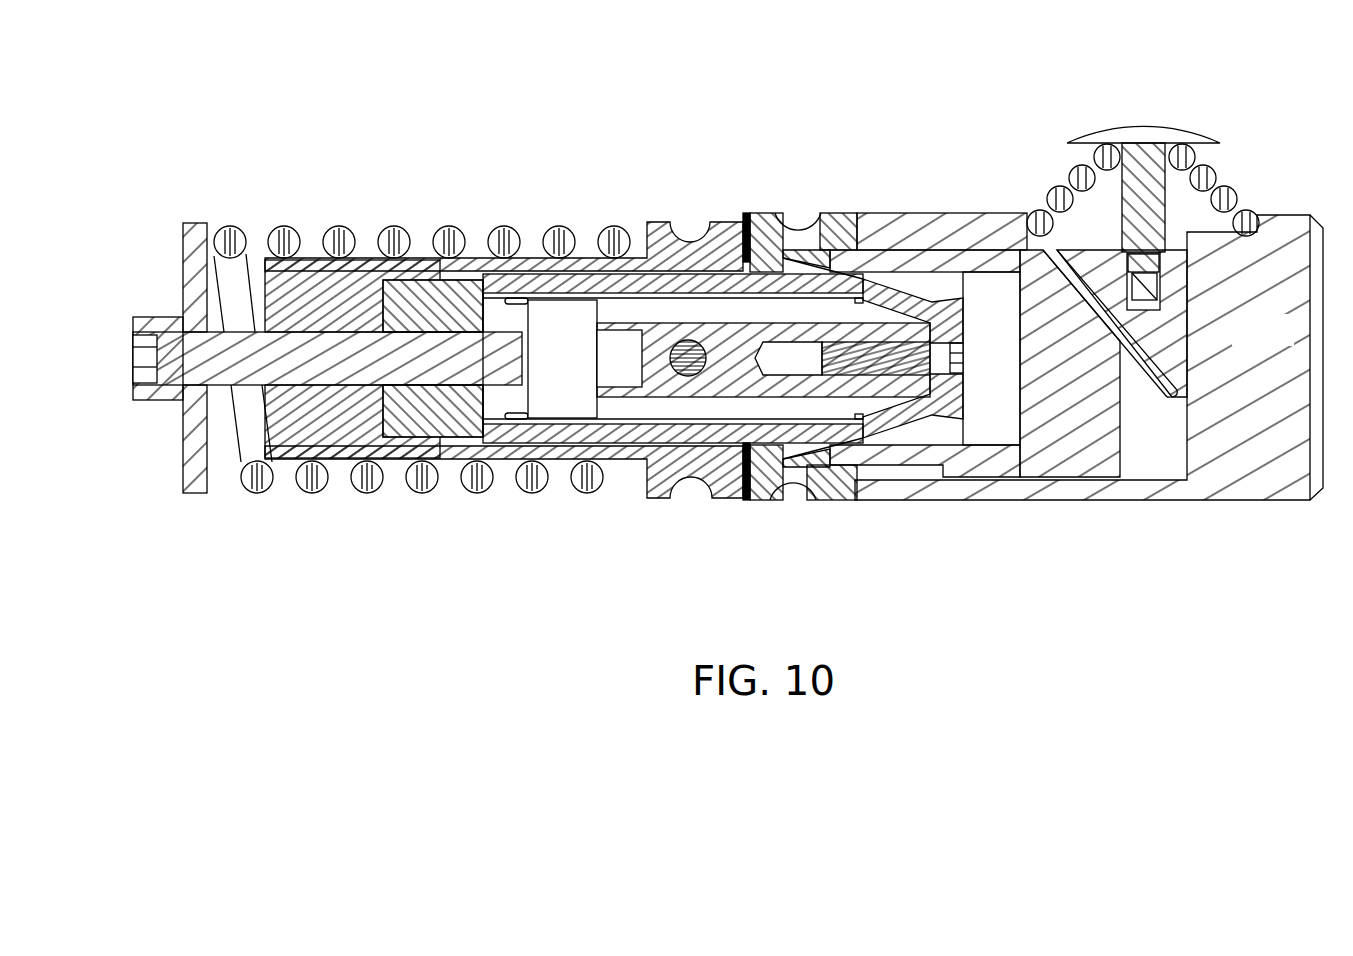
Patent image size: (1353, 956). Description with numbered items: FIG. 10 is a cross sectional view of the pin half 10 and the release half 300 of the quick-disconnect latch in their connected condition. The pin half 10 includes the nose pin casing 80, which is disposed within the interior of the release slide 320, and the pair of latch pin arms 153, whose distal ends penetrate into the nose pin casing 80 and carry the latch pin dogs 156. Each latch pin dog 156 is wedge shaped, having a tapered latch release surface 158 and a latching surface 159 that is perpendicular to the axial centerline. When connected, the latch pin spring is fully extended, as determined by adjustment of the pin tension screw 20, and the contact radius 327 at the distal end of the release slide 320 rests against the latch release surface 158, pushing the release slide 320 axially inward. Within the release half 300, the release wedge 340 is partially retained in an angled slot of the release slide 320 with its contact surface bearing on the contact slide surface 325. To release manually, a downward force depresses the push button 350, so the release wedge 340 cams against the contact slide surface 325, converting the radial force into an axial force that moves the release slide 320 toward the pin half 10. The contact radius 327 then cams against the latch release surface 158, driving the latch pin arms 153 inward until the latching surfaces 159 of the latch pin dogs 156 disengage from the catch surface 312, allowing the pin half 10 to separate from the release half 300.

The pin half 10 is at (343, 183).
The pin tension screw 20 is at (133, 375).
The latch pin arms 153 is at (638, 285).
The catch surface 312 is at (765, 240).
The latching surface 159 is at (803, 240).
The release slide 320 is at (890, 272).
The nose pin casing 80 is at (958, 300).
The contact slide surface 325 is at (1050, 253).
The push button 350 is at (1142, 136).
The release wedge 340 is at (1167, 326).
The release half 300 is at (1213, 540).
The latch pin dogs 156 is at (784, 472).
The latch release surface 158 is at (813, 476).
The contact radius 327 is at (848, 500).